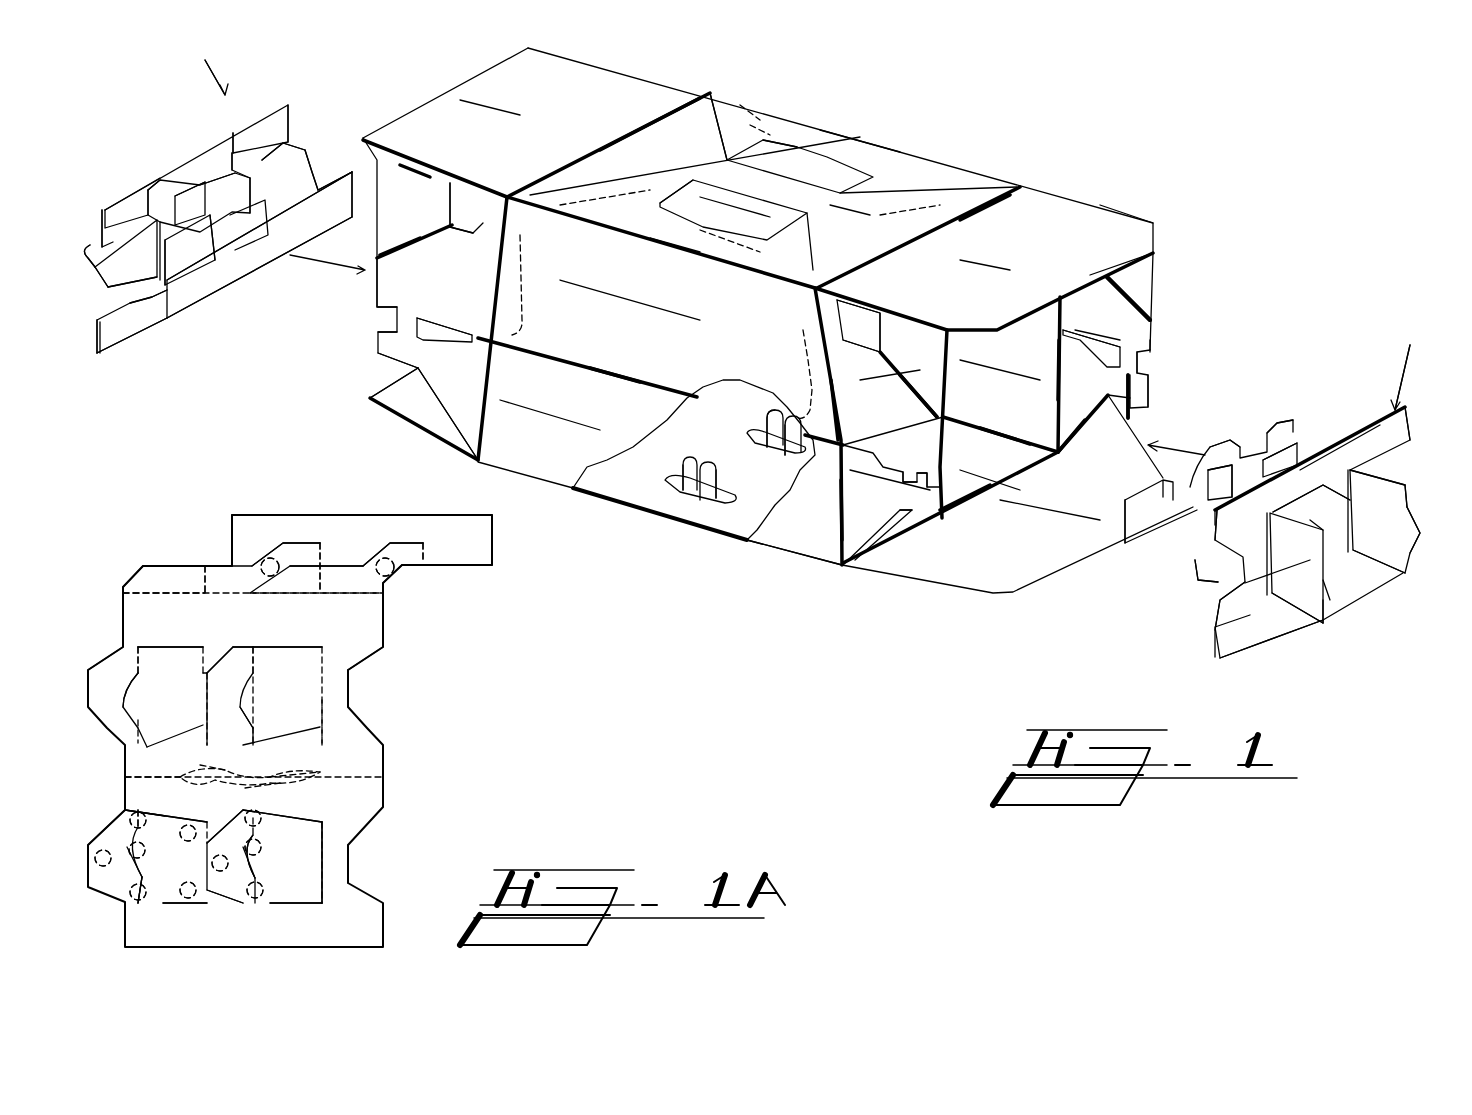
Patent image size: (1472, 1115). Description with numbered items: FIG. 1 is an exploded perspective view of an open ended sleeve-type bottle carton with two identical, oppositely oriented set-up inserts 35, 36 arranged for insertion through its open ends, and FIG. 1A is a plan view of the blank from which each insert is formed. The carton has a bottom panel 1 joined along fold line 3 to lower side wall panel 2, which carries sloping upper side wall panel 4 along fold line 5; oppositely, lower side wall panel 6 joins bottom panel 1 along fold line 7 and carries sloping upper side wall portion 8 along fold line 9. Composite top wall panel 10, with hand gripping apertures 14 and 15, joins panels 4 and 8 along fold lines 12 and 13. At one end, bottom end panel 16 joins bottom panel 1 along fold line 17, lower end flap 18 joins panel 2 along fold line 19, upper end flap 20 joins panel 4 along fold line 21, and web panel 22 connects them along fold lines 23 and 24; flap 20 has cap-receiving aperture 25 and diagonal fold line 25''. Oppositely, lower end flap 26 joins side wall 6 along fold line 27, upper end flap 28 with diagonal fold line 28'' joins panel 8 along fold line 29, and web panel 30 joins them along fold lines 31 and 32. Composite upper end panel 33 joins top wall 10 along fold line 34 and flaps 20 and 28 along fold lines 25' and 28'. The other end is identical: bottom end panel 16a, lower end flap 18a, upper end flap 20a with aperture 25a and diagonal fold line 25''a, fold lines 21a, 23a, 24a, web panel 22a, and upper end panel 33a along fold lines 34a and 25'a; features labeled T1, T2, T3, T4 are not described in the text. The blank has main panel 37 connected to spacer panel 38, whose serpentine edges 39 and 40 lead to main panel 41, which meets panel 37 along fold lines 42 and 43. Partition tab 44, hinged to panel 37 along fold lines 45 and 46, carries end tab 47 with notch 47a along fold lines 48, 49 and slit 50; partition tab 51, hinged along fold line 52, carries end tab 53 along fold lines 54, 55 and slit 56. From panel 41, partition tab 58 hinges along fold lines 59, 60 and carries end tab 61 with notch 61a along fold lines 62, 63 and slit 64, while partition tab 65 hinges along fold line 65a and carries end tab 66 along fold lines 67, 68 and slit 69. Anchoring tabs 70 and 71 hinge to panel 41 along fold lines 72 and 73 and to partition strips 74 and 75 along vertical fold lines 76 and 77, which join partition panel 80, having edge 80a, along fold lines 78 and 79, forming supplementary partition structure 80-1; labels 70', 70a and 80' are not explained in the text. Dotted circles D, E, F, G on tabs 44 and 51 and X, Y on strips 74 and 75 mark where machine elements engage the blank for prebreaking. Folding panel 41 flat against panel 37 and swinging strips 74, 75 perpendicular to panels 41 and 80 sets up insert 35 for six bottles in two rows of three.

In FIG. 1, the bottom panel 1 is at (988, 471).
In FIG. 1, the lower side wall panel 2 is at (534, 433).
In FIG. 1, the fold line 3 is at (757, 548).
In FIG. 1, the sloping upper side wall panel 4 is at (625, 327).
In FIG. 1, the fold line 5 is at (605, 375).
In FIG. 1, the lower side wall panel 6 is at (968, 388).
In FIG. 1, the fold line 7 is at (1005, 430).
In FIG. 1, the sloping upper side wall portion 8 is at (1040, 320).
In FIG. 1, the fold line 9 is at (1048, 340).
In FIG. 1, the top wall panel 10 is at (845, 239).
In FIG. 1, the fold line 12 is at (688, 265).
In FIG. 1, the fold line 13 is at (870, 130).
In FIG. 1, the hand gripping aperture 14 is at (670, 200).
In FIG. 1, the hand gripping aperture 15 is at (790, 140).
In FIG. 1, the bottom end panel 16 is at (1024, 533).
In FIG. 1, the fold line 17 is at (955, 505).
In FIG. 1, the lower end flap 18 is at (853, 508).
In FIG. 1, the fold line 19 is at (838, 500).
In FIG. 1, the upper end flap 20 is at (873, 416).
In FIG. 1, the fold line 21 is at (835, 410).
In FIG. 1, the web panel 22 is at (905, 470).
In FIG. 1, the fold line 23 is at (915, 500).
In FIG. 1, the fold line 24 is at (930, 465).
In FIG. 1, the aperture 25 is at (881, 306).
In FIG. 1, the fold line 25' is at (898, 316).
In FIG. 1, the diagonal fold line 25'' is at (924, 377).
In FIG. 1, the lower end flap 26 is at (1150, 395).
In FIG. 1, the fold line 27 is at (1065, 430).
In FIG. 1, the upper end flap 28 is at (1097, 319).
In FIG. 1, the fold line 28' is at (1139, 200).
In FIG. 1, the diagonal fold line 28'' is at (1166, 290).
In FIG. 1, the fold line 29 is at (1065, 297).
In FIG. 1, the web panel 30 is at (1150, 362).
In FIG. 1, the fold line 31 is at (1128, 385).
In FIG. 1, the fold line 32 is at (1133, 345).
In FIG. 1, the upper end panel 33 is at (980, 283).
In FIG. 1, the fold line 34 is at (1010, 200).
In FIG. 1, the fold line 34a is at (640, 95).
In FIG. 1, the upper end panel 33a is at (483, 129).
In FIG. 1, the aperture 25a is at (478, 205).
In FIG. 1, the fold line 25'a is at (425, 147).
In FIG. 1, the diagonal fold line 25''a is at (404, 224).
In FIG. 1A, the edge of partition panel 80a is at (495, 555).
In FIG. 1, the fold line 79 is at (313, 205).
In FIG. 1A, the fold line 79 is at (428, 550).
In FIG. 1, the upper end flap 20a is at (455, 274).
In FIG. 1, the fold line 21a is at (480, 285).
In FIG. 1, the fold line 24a is at (407, 313).
In FIG. 1, the web panel 22a is at (400, 322).
In FIG. 1, the fold line 23a is at (400, 340).
In FIG. 1, the lower end flap 18a is at (437, 389).
In FIG. 1, the bottom end panel 16a is at (398, 414).
In FIG. 1, the tab T1 is at (690, 460).
In FIG. 1, the tab T2 is at (710, 465).
In FIG. 1, the tab T3 is at (770, 415).
In FIG. 1, the tab T4 is at (788, 440).
In FIG. 1, the insert 35 is at (208, 71).
In FIG. 1, the insert 36 is at (1409, 364).
In FIG. 1, the main panel 37 is at (1400, 420).
In FIG. 1A, the main panel 37 is at (335, 814).
In FIG. 1A, the spacer panel 38 is at (222, 773).
In FIG. 1A, the serpentine side edge 39 is at (283, 783).
In FIG. 1A, the serpentine fold line 40 is at (278, 765).
In FIG. 1A, the main panel 41 is at (336, 648).
In FIG. 1, the fold line 42 is at (125, 345).
In FIG. 1A, the fold line 42 is at (145, 775).
In FIG. 1, the fold line 43 is at (1248, 640).
In FIG. 1A, the fold line 43 is at (378, 780).
In FIG. 1A, the partition tab 44 is at (173, 871).
In FIG. 1A, the fold line 45 is at (212, 900).
In FIG. 1A, the fold line 46 is at (210, 835).
In FIG. 1, the end tab 47 is at (95, 275).
In FIG. 1A, the end tab 47 is at (100, 893).
In FIG. 1A, the notch 47a is at (350, 850).
In FIG. 1, the fold line 48 is at (1325, 620).
In FIG. 1A, the fold line 48 is at (142, 825).
In FIG. 1, the fold line 49 is at (1300, 530).
In FIG. 1A, the fold line 49 is at (140, 905).
In FIG. 1A, the slit 50 is at (140, 867).
In FIG. 1A, the partition tab 51 is at (268, 858).
In FIG. 1A, the fold line 52 is at (325, 870).
In FIG. 1, the end tab 53 is at (195, 165).
In FIG. 1A, the end tab 53 is at (216, 893).
In FIG. 1, the fold line 54 is at (1412, 500).
In FIG. 1A, the fold line 54 is at (257, 900).
In FIG. 1, the fold line 55 is at (1408, 570).
In FIG. 1A, the fold line 55 is at (255, 818).
In FIG. 1, the slit 56 is at (1420, 535).
In FIG. 1A, the slit 56 is at (260, 868).
In FIG. 1A, the partition tab 58 is at (168, 701).
In FIG. 1A, the fold line 59 is at (215, 730).
In FIG. 1A, the fold line 60 is at (212, 660).
In FIG. 1, the end tab 61 is at (200, 275).
In FIG. 1A, the end tab 61 is at (90, 698).
In FIG. 1A, the notch 61a is at (352, 680).
In FIG. 1A, the fold line 62 is at (147, 735).
In FIG. 1, the fold line 63 is at (1198, 580).
In FIG. 1A, the fold line 63 is at (140, 658).
In FIG. 1, the slit 64 is at (1195, 540).
In FIG. 1A, the slit 64 is at (125, 700).
In FIG. 1A, the partition tab 65 is at (283, 698).
In FIG. 1A, the fold line 65a is at (325, 715).
In FIG. 1, the end tab 66 is at (283, 205).
In FIG. 1A, the end tab 66 is at (213, 698).
In FIG. 1A, the fold line 67 is at (255, 735).
In FIG. 1A, the fold line 68 is at (255, 663).
In FIG. 1A, the slit 69 is at (245, 708).
In FIG. 1, the anchoring tab 70 is at (110, 179).
In FIG. 1A, the anchoring tab 70 is at (174, 577).
In FIG. 1A, the strip end 70' is at (115, 557).
In FIG. 1, the strip end 70a is at (298, 165).
In FIG. 1A, the strip end 70a is at (390, 580).
In FIG. 1, the anchoring tab 71 is at (230, 155).
In FIG. 1A, the anchoring tab 71 is at (288, 588).
In FIG. 1, the fold line 72 is at (95, 215).
In FIG. 1A, the fold line 72 is at (180, 597).
In FIG. 1, the fold line 73 is at (215, 150).
In FIG. 1A, the fold line 73 is at (292, 597).
In FIG. 1A, the partition strip 74 is at (218, 588).
In FIG. 1A, the partition strip 75 is at (336, 588).
In FIG. 1, the vertical fold line 76 is at (150, 200).
In FIG. 1A, the vertical fold line 76 is at (210, 580).
In FIG. 1A, the vertical fold line 77 is at (322, 585).
In FIG. 1, the fold line 78 is at (245, 250).
In FIG. 1A, the fold line 78 is at (322, 545).
In FIG. 1A, the partition panel 80 is at (362, 530).
In FIG. 1, the strip end 80' is at (168, 329).
In FIG. 1A, the strip end 80' is at (204, 530).
In FIG. 1A, the supplementary partition structure 80-1 is at (470, 578).
In FIG. 1A, the tab engaging element D is at (253, 847).
In FIG. 1A, the tab engaging element E is at (137, 850).
In FIG. 1A, the engagement position F is at (103, 858).
In FIG. 1A, the engagement position G is at (220, 863).
In FIG. 1A, the projection X is at (270, 567).
In FIG. 1A, the projection Y is at (385, 567).